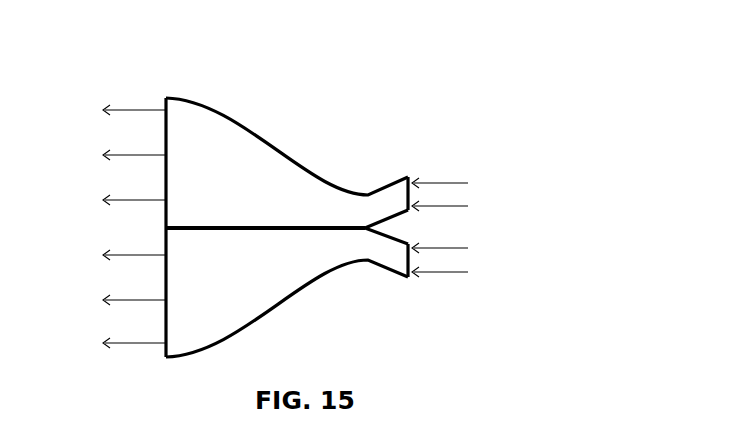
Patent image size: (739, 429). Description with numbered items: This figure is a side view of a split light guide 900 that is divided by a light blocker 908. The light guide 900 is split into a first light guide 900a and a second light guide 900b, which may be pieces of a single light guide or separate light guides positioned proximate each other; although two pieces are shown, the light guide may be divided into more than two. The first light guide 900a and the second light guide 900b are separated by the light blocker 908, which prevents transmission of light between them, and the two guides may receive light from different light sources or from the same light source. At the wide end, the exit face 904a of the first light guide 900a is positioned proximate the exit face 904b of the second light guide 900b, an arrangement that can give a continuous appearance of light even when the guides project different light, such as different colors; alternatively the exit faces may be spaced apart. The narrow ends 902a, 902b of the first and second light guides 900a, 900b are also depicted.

The light guide 900 is at (204, 82).
The first light guide 900a is at (247, 143).
The second light guide 900b is at (247, 314).
The upper outlet 902a is at (410, 174).
The lower outlet 902b is at (410, 282).
The exit face 904a is at (160, 95).
The exit face 904b is at (160, 357).
The light blocker 908 is at (268, 230).